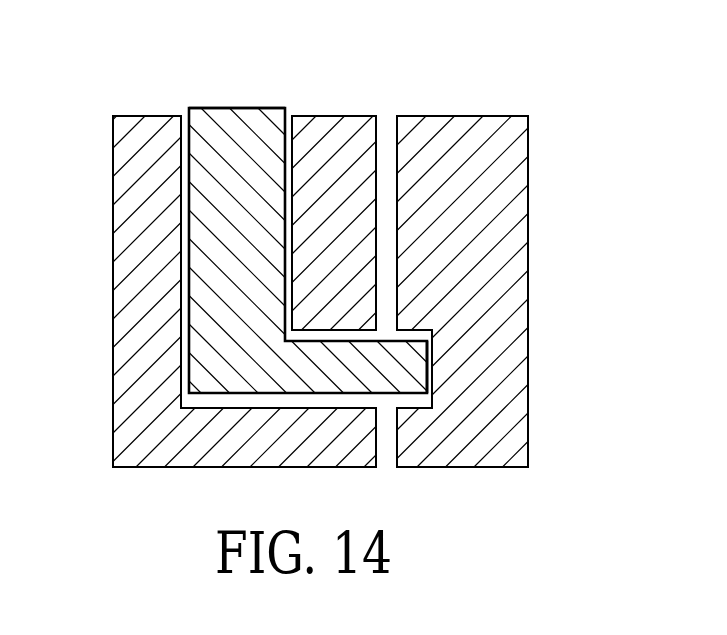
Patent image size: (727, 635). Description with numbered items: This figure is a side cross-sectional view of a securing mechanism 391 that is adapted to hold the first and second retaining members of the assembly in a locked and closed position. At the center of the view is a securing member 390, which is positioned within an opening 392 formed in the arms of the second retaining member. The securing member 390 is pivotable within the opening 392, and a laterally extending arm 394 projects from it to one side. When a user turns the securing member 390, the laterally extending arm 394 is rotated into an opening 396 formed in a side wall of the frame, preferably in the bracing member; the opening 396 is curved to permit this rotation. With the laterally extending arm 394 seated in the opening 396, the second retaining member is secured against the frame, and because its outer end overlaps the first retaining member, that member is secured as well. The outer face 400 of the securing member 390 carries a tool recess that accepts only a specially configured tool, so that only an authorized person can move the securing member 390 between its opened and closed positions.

The securing member 390 is at (242, 122).
The securing mechanism 391 is at (135, 88).
The opening 392 is at (185, 117).
The laterally extending arm 394 is at (430, 368).
The opening 396 is at (413, 400).
The outer face 400 is at (260, 107).